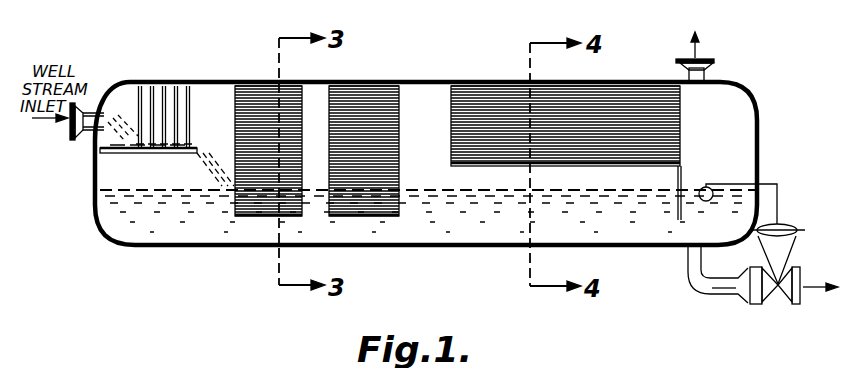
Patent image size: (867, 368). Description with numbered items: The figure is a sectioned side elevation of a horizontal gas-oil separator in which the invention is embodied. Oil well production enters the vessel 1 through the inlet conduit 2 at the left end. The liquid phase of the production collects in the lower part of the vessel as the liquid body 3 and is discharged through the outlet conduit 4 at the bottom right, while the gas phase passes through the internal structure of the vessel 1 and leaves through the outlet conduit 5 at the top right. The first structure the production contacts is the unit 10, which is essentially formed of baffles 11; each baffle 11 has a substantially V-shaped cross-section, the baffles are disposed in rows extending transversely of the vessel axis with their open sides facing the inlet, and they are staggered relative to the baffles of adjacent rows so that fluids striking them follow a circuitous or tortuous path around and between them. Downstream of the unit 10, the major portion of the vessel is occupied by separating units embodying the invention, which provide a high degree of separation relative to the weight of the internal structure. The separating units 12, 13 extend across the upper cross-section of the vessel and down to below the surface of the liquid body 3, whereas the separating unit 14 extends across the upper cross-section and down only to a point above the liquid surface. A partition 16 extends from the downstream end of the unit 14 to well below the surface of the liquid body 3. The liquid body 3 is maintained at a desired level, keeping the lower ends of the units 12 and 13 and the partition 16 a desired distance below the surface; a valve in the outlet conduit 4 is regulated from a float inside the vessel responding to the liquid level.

The vessel 1 is at (200, 247).
The inlet conduit 2 is at (97, 113).
The liquid body 3 is at (613, 233).
The outlet conduit 4 is at (734, 291).
The outlet conduit 5 is at (710, 80).
The unit 10 is at (167, 112).
The baffle 11 is at (190, 82).
The separating unit 12 is at (290, 95).
The separating unit 13 is at (378, 95).
The separating unit 14 is at (600, 98).
The partition 16 is at (682, 180).